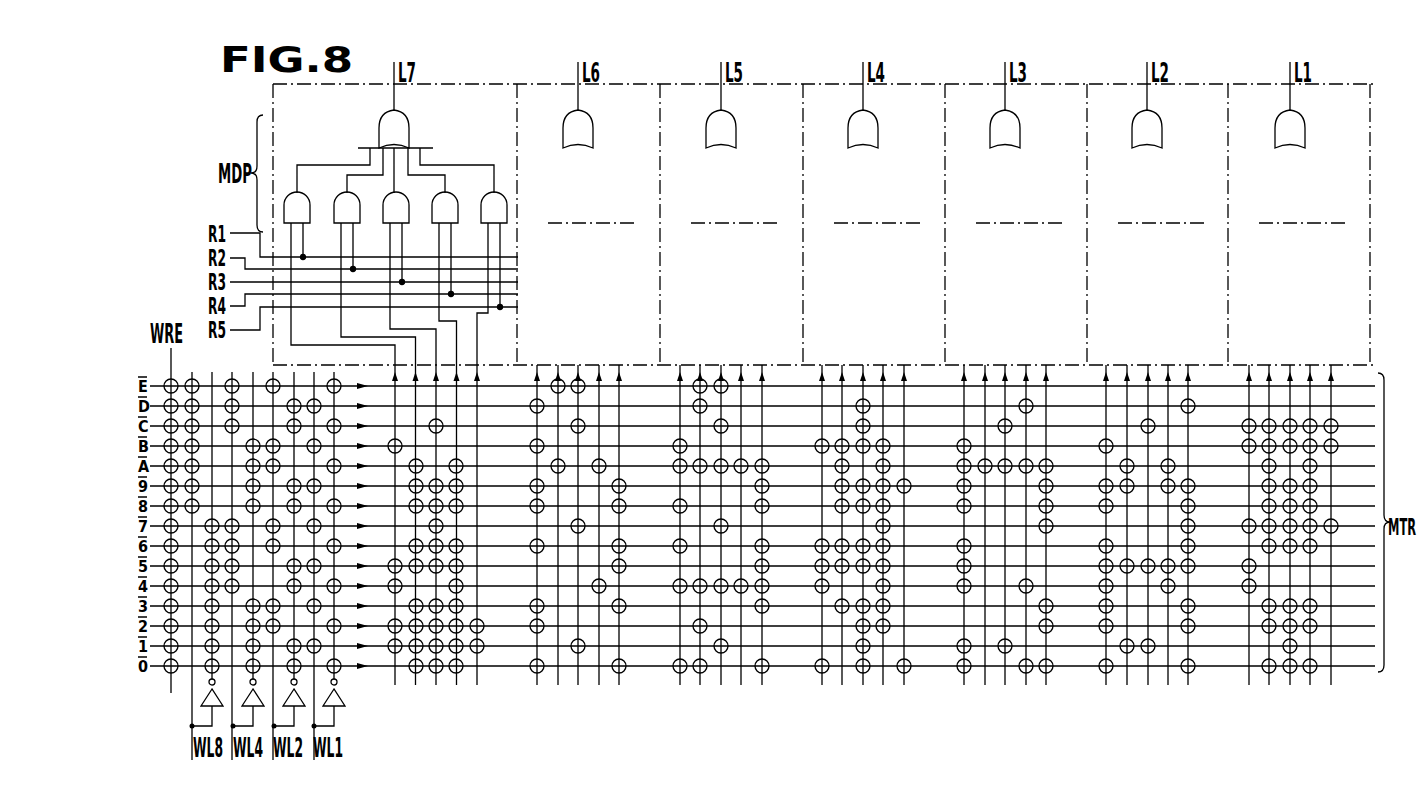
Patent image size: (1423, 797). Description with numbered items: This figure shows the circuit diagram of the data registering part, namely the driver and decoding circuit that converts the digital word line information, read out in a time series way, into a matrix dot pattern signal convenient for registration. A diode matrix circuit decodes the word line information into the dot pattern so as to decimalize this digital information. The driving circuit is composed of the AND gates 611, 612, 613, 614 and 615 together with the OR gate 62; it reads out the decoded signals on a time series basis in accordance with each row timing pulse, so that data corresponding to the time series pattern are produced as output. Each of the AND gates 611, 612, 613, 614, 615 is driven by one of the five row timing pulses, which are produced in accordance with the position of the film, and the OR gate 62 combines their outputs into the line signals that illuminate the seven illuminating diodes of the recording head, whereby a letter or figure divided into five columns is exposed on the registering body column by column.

The OR gate 62 is at (395, 127).
The AND gate 611 is at (308, 210).
The AND gate 612 is at (358, 210).
The AND gate 613 is at (407, 210).
The AND gate 614 is at (456, 210).
The AND gate 615 is at (505, 210).